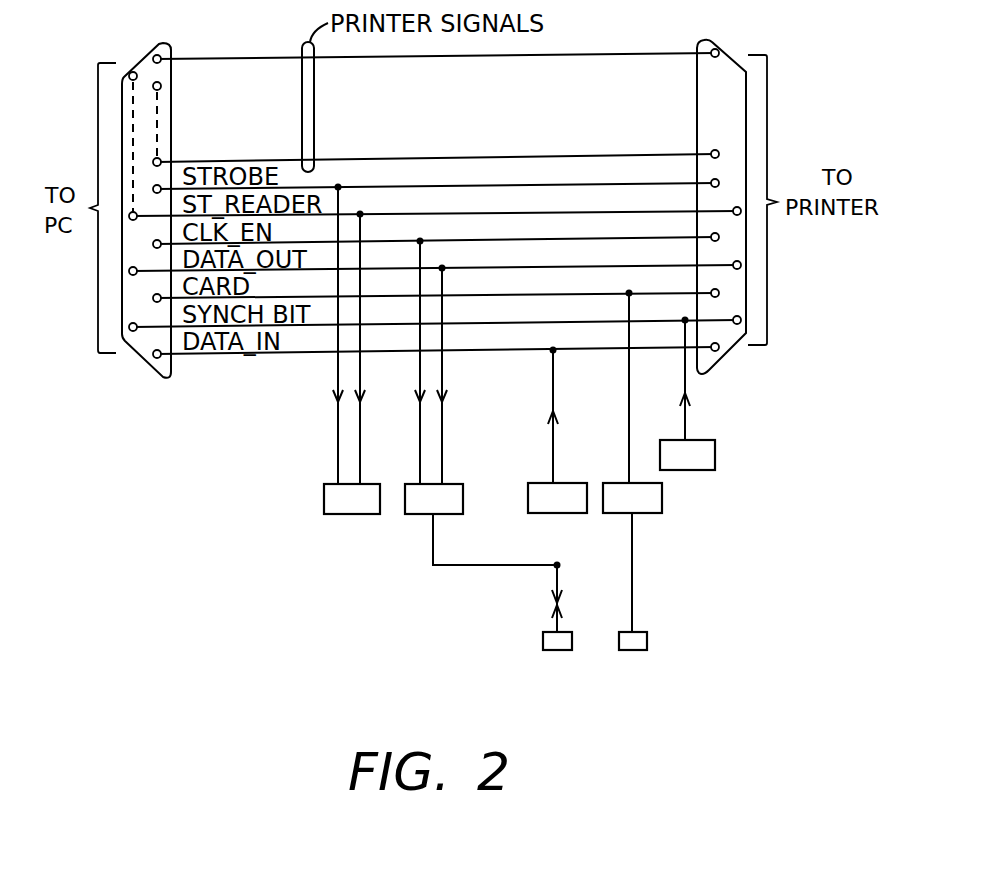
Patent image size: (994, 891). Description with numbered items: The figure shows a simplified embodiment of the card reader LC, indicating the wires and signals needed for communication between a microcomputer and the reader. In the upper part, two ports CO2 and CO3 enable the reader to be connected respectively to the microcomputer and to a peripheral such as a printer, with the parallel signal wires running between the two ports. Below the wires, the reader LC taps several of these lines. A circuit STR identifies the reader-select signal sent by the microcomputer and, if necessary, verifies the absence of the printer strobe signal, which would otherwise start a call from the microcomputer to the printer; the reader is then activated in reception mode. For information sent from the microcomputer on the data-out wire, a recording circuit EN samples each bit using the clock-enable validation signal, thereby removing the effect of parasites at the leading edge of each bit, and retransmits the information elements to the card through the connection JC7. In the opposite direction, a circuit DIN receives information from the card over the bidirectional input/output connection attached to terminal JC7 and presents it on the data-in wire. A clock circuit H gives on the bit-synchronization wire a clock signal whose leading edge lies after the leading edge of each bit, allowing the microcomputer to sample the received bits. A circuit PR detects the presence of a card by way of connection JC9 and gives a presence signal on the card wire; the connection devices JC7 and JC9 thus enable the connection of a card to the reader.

The port CO2 is at (155, 50).
The port CO3 is at (726, 43).
The reader LC is at (370, 334).
The circuit STR is at (360, 516).
The recording circuit EN is at (423, 516).
The circuit DIN is at (545, 516).
The circuit PR is at (663, 515).
The clock circuit H is at (717, 465).
The connection device JC7 is at (562, 651).
The connection device JC9 is at (633, 651).